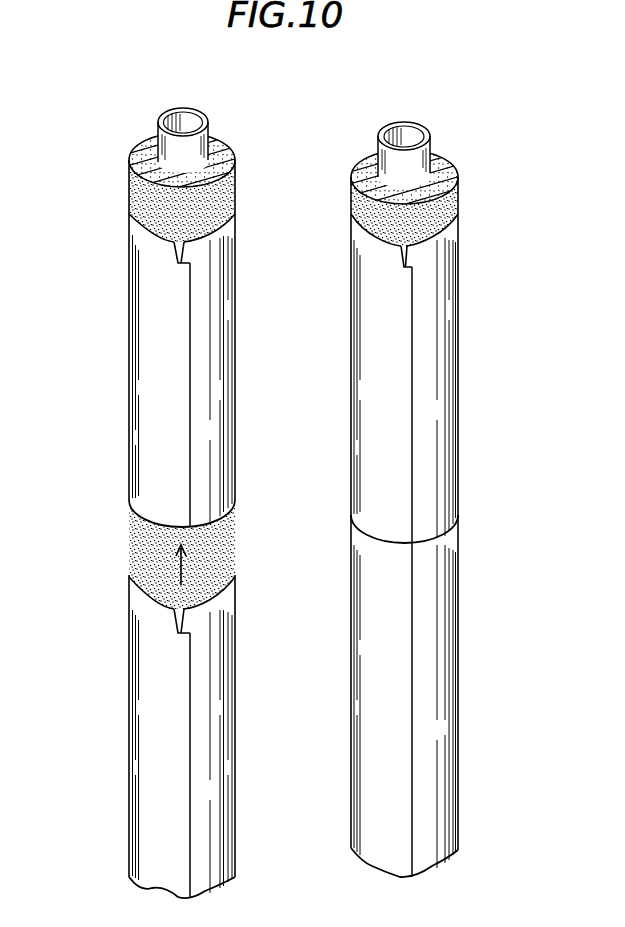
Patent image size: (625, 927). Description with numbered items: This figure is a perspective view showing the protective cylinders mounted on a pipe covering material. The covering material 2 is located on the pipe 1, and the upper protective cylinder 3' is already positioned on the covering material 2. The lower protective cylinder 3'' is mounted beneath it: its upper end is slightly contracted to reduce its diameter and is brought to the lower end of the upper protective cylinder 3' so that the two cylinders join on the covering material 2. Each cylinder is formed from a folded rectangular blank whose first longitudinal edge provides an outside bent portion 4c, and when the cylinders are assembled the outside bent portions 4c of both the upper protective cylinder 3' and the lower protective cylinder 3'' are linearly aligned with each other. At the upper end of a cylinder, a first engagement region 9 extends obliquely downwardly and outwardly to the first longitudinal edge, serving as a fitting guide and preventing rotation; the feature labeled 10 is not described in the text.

The pipe 1 is at (181, 108).
The covering material 2 is at (137, 192).
The upper protective cylinder 3' is at (285, 351).
The lower protective cylinder 3'' is at (285, 706).
The outside bent portion 4c is at (190, 398).
The first engagement region 9 is at (173, 233).
The lower edge of foam 10 is at (190, 233).